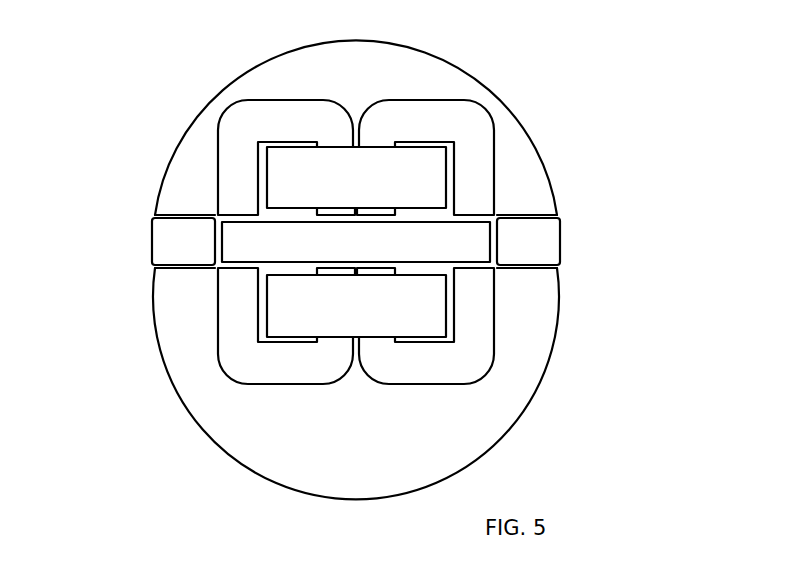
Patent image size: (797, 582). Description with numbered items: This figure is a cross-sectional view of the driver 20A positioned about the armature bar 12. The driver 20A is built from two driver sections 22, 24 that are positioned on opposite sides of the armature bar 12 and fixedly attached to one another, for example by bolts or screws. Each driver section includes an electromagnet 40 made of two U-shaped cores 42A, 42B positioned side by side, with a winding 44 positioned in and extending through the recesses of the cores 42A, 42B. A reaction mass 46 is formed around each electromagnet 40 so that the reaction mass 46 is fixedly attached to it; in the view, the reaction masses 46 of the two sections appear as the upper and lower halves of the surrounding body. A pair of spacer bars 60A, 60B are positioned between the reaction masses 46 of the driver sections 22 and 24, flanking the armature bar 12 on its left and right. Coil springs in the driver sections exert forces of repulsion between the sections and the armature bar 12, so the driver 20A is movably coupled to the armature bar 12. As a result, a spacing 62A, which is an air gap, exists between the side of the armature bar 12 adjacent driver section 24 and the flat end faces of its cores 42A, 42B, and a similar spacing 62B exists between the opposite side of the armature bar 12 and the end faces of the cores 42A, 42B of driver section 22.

The armature bar 12 is at (369, 255).
The driver 20A is at (615, 65).
The driver section 22 is at (152, 417).
The driver section 24 is at (155, 80).
The electromagnet 40 is at (399, 244).
The U-shaped core 42A is at (275, 100).
The U-shaped core 42B is at (442, 100).
The winding 44 is at (369, 188).
The reaction mass 46 is at (369, 86).
The spacer bar 60A is at (204, 255).
The spacer bar 60B is at (549, 255).
The spacing 62A is at (430, 215).
The spacing 62B is at (433, 267).